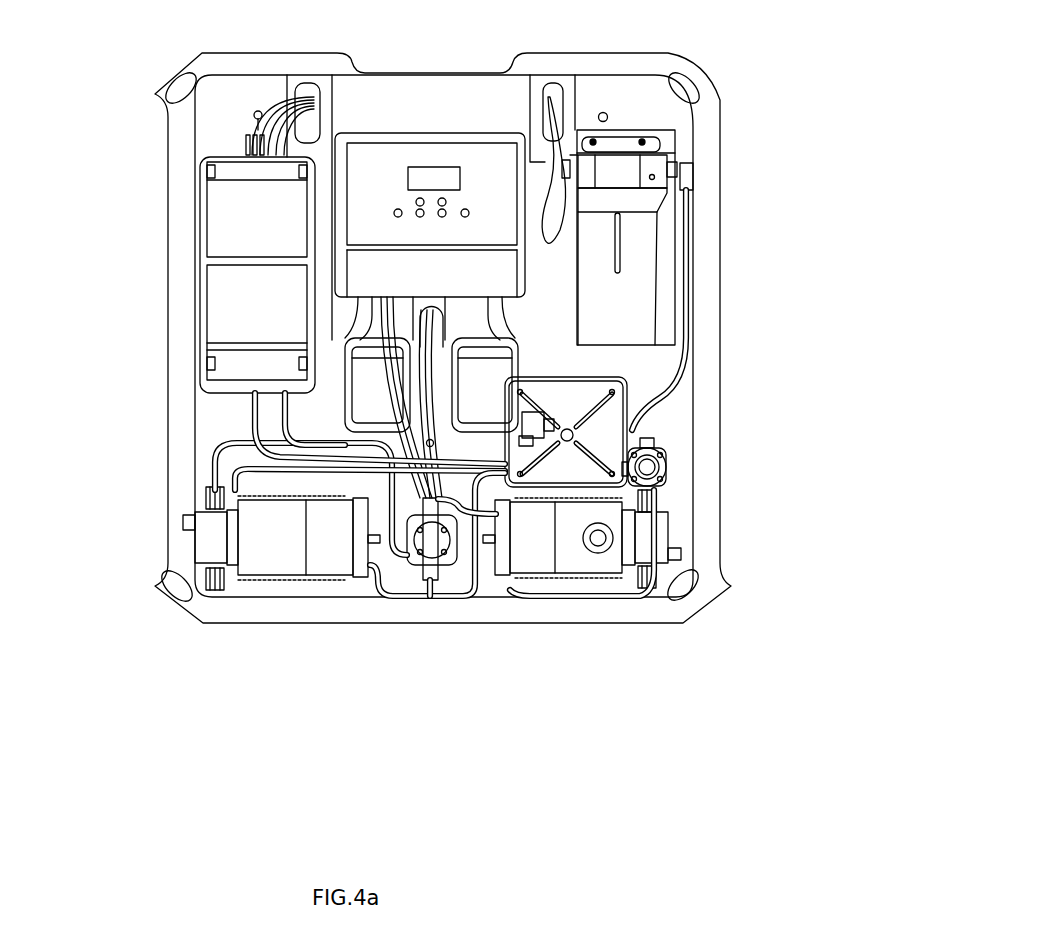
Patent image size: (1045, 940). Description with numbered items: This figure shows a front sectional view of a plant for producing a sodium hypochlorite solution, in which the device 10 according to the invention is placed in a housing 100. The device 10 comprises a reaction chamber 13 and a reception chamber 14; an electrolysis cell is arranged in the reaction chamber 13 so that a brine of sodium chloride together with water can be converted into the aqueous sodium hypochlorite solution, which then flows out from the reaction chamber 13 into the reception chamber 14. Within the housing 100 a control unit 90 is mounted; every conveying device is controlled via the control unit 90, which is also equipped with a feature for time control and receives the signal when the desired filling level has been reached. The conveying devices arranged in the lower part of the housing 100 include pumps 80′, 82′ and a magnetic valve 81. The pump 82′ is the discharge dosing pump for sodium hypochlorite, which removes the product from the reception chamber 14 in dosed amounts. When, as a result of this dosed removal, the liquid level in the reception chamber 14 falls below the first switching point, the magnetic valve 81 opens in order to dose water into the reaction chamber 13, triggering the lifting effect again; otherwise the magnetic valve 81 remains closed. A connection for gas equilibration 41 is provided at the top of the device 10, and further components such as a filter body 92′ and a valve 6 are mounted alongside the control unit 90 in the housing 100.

The device 10 is at (186, 245).
The housing 100 is at (717, 238).
The reaction chamber 13 is at (255, 208).
The reception chamber 14 is at (247, 330).
The connection for gas equilibration 41 is at (270, 148).
The control unit 90 is at (490, 183).
The filter body 92′ is at (633, 315).
The valve 6 is at (650, 465).
The first pump 80′ is at (272, 547).
The magnetic valve 81 is at (435, 545).
The pump for sodium hypochlorite 82′ is at (565, 533).